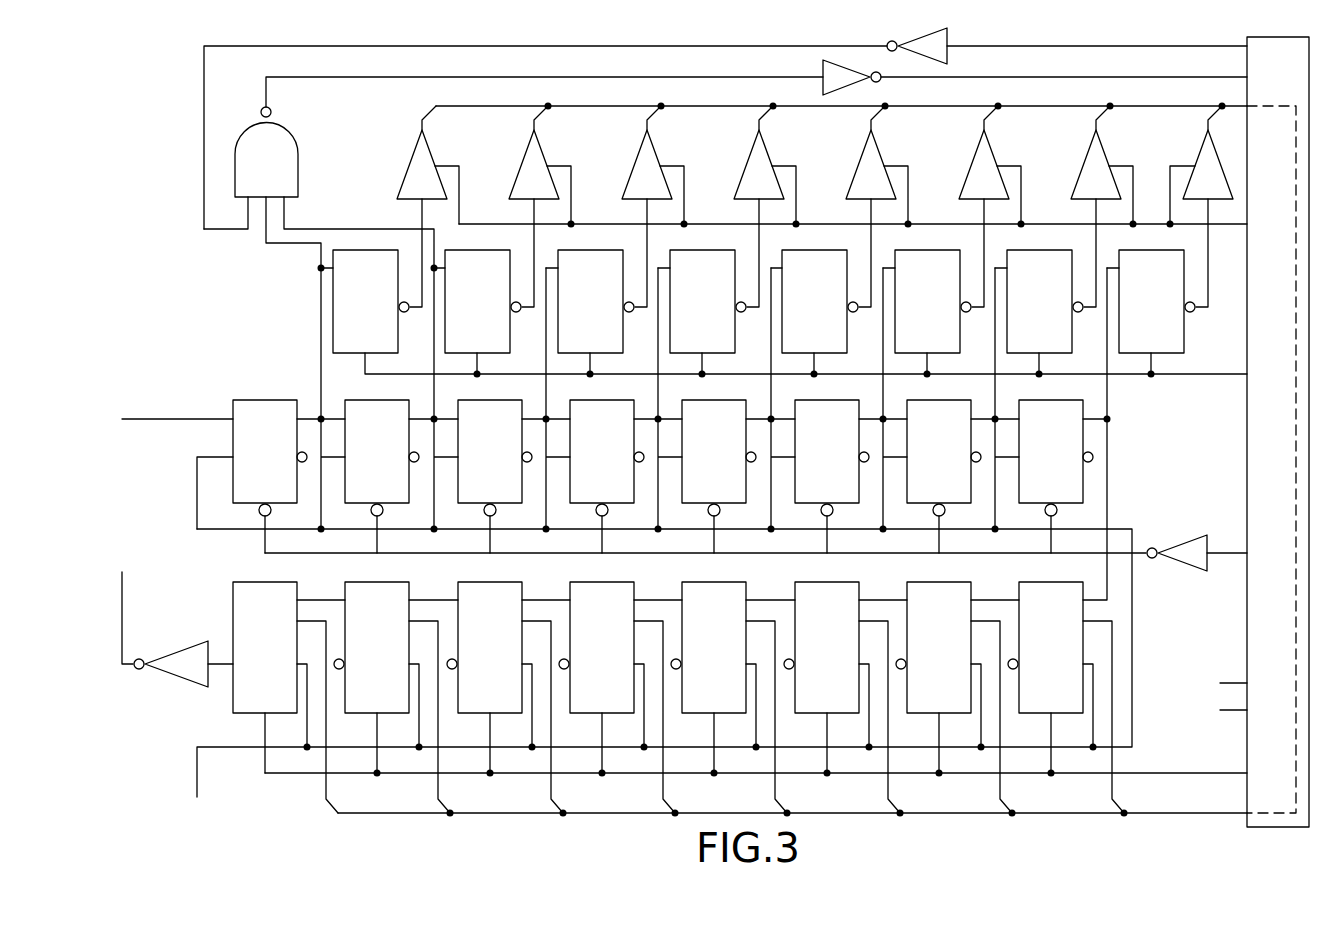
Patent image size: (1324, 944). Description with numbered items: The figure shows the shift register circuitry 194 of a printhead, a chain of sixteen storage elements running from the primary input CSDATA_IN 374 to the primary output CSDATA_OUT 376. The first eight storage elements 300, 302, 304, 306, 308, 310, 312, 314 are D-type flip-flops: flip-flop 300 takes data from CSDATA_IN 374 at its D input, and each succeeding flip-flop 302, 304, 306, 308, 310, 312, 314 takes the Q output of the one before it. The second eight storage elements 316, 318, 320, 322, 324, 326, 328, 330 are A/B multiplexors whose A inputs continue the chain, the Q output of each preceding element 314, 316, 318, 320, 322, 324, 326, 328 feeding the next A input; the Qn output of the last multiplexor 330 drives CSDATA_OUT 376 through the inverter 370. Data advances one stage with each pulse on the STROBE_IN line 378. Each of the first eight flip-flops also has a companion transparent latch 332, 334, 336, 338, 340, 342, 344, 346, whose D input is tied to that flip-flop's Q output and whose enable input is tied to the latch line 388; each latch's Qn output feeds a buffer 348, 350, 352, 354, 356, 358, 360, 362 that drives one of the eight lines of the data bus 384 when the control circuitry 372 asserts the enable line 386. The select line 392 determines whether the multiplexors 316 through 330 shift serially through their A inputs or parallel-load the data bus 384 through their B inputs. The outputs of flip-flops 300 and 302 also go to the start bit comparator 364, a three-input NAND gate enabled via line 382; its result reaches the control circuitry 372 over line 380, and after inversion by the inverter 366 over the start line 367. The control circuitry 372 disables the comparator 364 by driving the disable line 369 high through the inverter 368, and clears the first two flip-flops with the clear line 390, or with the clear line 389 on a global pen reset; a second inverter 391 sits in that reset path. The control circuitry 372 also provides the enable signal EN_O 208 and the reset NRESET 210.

The shift register circuit 194 is at (209, 301).
The enable signal EN_O 208 is at (1233, 683).
The NRESET 210 is at (1228, 710).
The storage element 300 is at (265, 400).
The storage element 302 is at (392, 400).
The storage element 304 is at (505, 400).
The storage element 306 is at (617, 400).
The storage element 308 is at (729, 400).
The storage element 310 is at (842, 400).
The storage element 312 is at (954, 400).
The storage element 314 is at (1083, 408).
The A/B multiplexor 316 is at (1083, 592).
The A/B multiplexor 318 is at (954, 582).
The A/B multiplexor 320 is at (842, 582).
The A/B multiplexor 322 is at (729, 582).
The A/B multiplexor 324 is at (617, 582).
The A/B multiplexor 326 is at (505, 582).
The A/B multiplexor 328 is at (392, 582).
The A/B multiplexor 330 is at (280, 582).
The latch 332 is at (372, 250).
The latch 334 is at (473, 250).
The latch 336 is at (587, 250).
The latch 338 is at (700, 250).
The latch 340 is at (812, 250).
The latch 342 is at (925, 250).
The latch 344 is at (1038, 250).
The latch 346 is at (1184, 342).
The buffer 348 is at (398, 178).
The buffer 350 is at (521, 168).
The buffer 352 is at (634, 168).
The buffer 354 is at (746, 168).
The buffer 356 is at (858, 168).
The buffer 358 is at (971, 168).
The buffer 360 is at (1083, 168).
The buffer 362 is at (1195, 168).
The start bit comparator 364 is at (298, 152).
The inverter 366 is at (822, 72).
The start line 367 is at (1196, 77).
The inverter 368 is at (947, 57).
The disable line 369 is at (1097, 47).
The inverter 370 is at (188, 686).
The control circuitry 372 is at (1247, 487).
The CSDATA_IN 374 is at (150, 419).
The CSDATA_OUT 376 is at (122, 607).
The STROBE_IN line 378 is at (197, 762).
The line 380 is at (686, 77).
The line 382 is at (392, 47).
The data bus 384 is at (588, 106).
The enable line 386 is at (945, 224).
The latch line 388 is at (1172, 374).
The clear line 389 is at (1228, 553).
The clear line 390 is at (822, 553).
The inverter 391 is at (1192, 571).
The select line 392 is at (1150, 773).